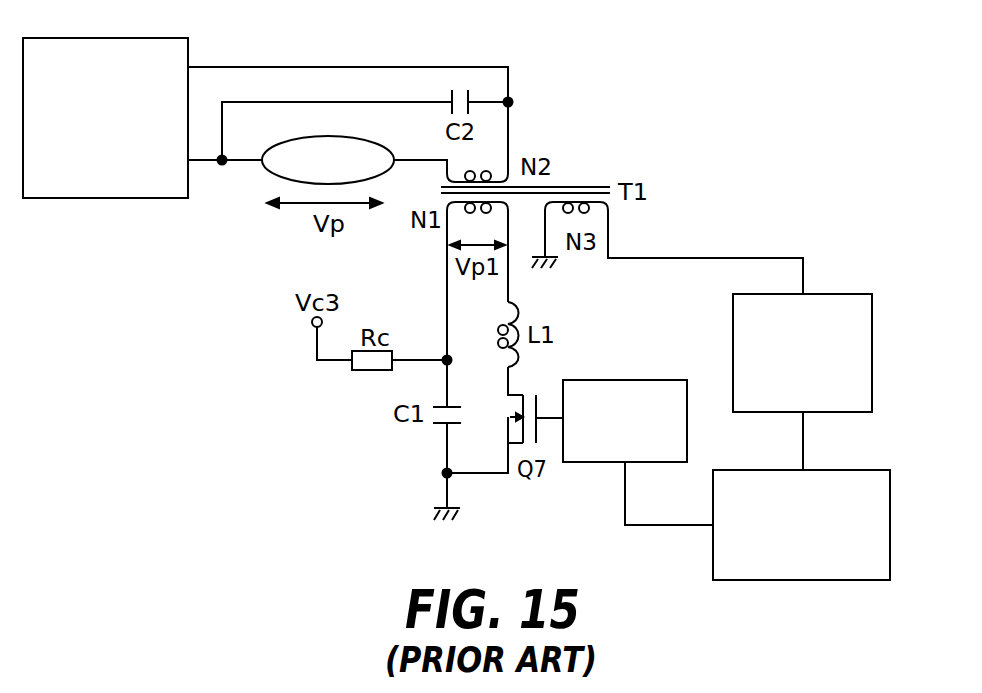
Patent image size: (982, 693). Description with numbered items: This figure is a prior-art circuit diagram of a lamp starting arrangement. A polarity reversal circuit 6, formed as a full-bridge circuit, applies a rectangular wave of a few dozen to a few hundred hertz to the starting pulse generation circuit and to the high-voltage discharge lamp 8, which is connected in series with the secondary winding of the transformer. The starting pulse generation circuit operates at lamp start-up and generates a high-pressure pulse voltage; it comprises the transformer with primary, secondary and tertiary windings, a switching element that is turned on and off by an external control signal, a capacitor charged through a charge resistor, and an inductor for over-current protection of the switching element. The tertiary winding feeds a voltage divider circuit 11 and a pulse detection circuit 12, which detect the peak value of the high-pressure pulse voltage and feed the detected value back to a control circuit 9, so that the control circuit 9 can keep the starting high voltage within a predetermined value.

The polarity reversal circuit 6 is at (106, 198).
The high-voltage discharge lamp 8 is at (370, 137).
The control circuit 9 is at (612, 380).
The voltage divider circuit 11 is at (827, 294).
The pulse detection circuit 12 is at (837, 470).